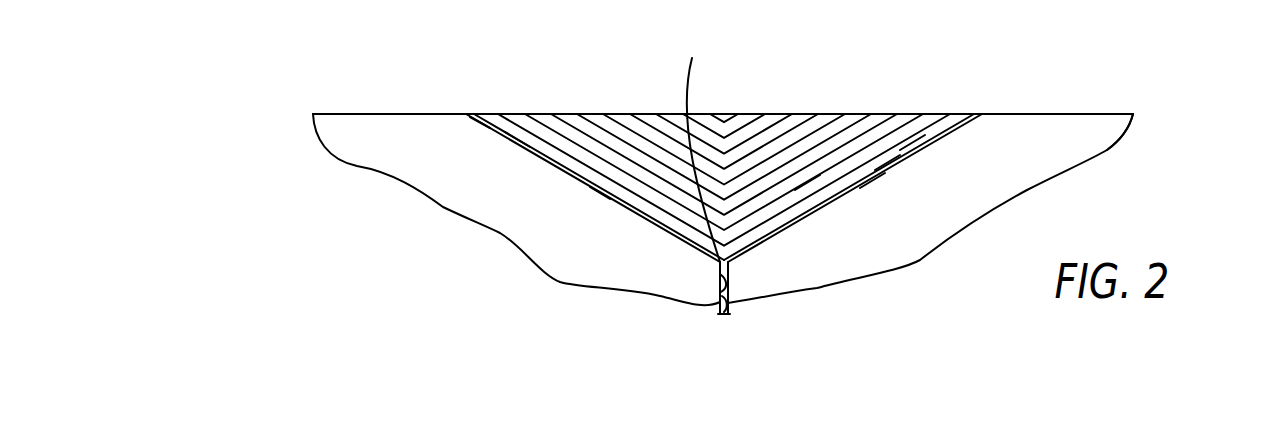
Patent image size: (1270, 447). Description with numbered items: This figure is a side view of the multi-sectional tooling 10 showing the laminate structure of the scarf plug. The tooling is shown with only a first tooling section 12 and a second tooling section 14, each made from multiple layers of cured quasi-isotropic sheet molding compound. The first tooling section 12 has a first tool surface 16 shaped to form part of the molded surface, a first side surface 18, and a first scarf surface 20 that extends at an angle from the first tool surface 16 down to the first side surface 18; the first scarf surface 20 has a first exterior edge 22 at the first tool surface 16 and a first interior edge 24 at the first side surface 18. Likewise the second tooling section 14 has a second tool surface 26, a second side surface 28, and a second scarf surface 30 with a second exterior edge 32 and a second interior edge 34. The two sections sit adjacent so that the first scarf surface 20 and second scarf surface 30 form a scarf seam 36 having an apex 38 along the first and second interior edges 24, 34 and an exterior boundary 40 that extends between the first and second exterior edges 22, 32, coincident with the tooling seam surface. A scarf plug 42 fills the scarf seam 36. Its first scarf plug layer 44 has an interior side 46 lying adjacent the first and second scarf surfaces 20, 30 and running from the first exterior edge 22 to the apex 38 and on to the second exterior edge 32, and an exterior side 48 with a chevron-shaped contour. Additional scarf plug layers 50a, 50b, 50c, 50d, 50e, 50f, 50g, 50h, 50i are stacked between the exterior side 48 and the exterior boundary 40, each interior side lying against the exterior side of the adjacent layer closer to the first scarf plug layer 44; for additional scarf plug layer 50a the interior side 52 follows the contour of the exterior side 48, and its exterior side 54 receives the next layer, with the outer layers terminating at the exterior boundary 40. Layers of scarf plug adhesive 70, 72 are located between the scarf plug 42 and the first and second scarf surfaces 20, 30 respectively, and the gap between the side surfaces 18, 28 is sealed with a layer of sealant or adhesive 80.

The multi-sectional tooling 10 is at (284, 99).
The first tooling section 12 is at (1085, 148).
The second tooling section 14 is at (368, 158).
The first tool surface 16 is at (1096, 114).
The first side surface 18 is at (724, 310).
The first scarf surface 20 is at (880, 167).
The first exterior edge 22 is at (982, 114).
The first interior edge 24 is at (727, 256).
The second tool surface 26 is at (353, 114).
The second side surface 28 is at (727, 312).
The second scarf surface 30 is at (587, 180).
The second exterior edge 32 is at (467, 114).
The second interior edge 34 is at (718, 263).
The scarf seam 36 is at (809, 86).
The apex 38 is at (700, 147).
The exterior boundary 40 is at (610, 114).
The scarf plug 42 is at (887, 114).
The first scarf plug layer 44 is at (520, 137).
The interior side 46 is at (482, 128).
The exterior side 48 is at (512, 114).
The additional scarf plug layer 50a is at (518, 114).
The additional scarf plug layer 50b is at (903, 114).
The additional scarf plug layer 50c is at (568, 114).
The additional scarf plug layer 50d is at (857, 114).
The additional scarf plug layer 50e is at (630, 114).
The additional scarf plug layer 50f is at (797, 114).
The additional scarf plug layer 50g is at (672, 114).
The additional scarf plug layer 50h is at (748, 114).
The additional scarf plug layer 50i is at (722, 114).
The interior side of additional scarf plug layer 52 is at (907, 140).
The exterior side of additional scarf plug layer 54 is at (797, 187).
The scarf plug adhesive layer 70 is at (867, 183).
The scarf plug adhesive layer 72 is at (600, 193).
The sealant layer 80 is at (725, 305).